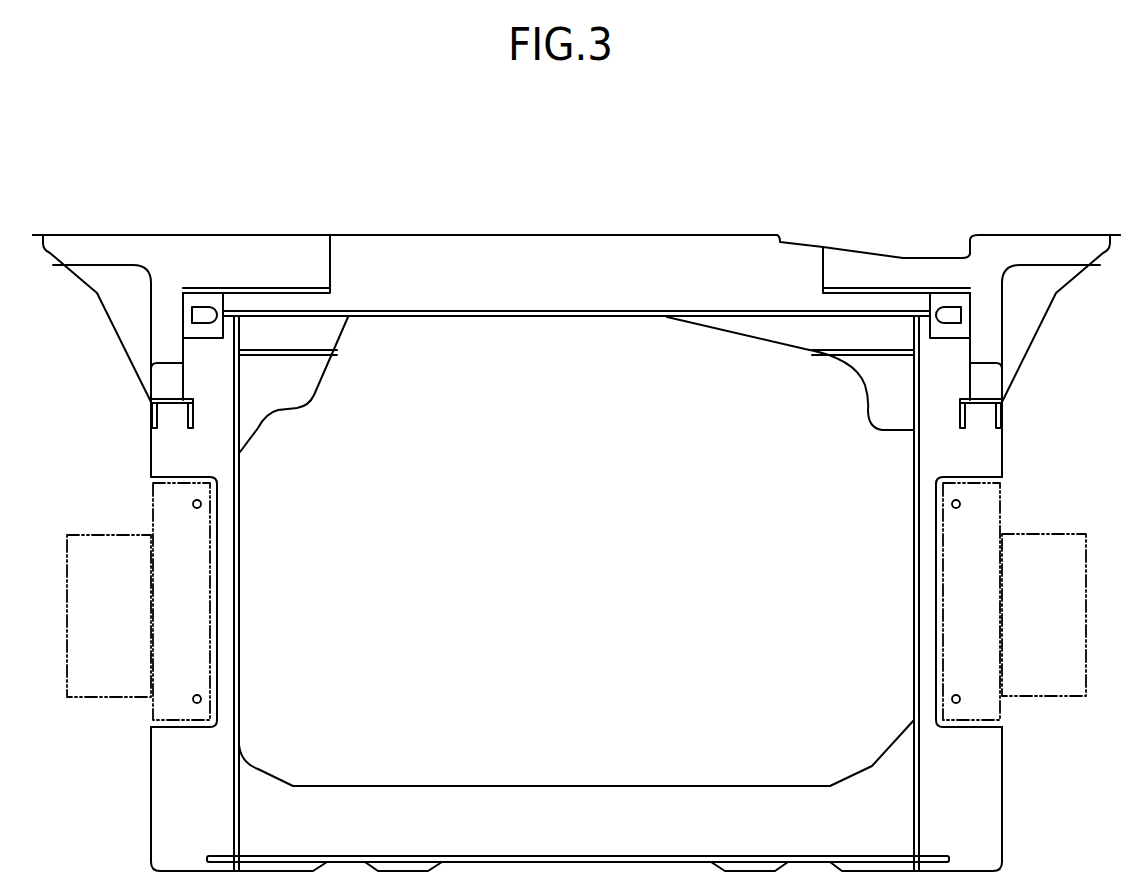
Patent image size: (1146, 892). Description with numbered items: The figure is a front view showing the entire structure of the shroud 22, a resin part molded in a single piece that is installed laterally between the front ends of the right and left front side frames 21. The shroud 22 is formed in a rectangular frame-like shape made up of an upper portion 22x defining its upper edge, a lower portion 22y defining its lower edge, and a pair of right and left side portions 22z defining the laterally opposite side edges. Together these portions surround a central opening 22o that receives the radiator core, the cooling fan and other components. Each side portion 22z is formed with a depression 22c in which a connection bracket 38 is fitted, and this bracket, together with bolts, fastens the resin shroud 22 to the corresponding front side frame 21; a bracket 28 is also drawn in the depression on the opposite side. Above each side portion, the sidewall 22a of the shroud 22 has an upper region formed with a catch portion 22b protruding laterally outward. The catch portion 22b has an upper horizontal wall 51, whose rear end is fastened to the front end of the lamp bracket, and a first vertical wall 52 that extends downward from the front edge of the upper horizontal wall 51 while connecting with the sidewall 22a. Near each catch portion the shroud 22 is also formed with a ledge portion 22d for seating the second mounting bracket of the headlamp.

The shroud 22 is at (610, 215).
The sidewall 22a is at (157, 218).
The catch portion 22b is at (90, 218).
The depression 22c is at (215, 602).
The ledge portion 22d is at (150, 400).
The central opening 22o is at (603, 543).
The upper portion 22x is at (737, 248).
The lower portion 22y is at (657, 800).
The side portion 22z is at (167, 805).
The front side frame 21 is at (107, 530).
The mounting bracket 28 is at (200, 542).
The connection bracket 38 is at (954, 541).
The upper horizontal wall 51 is at (40, 233).
The first vertical wall 52 is at (63, 250).